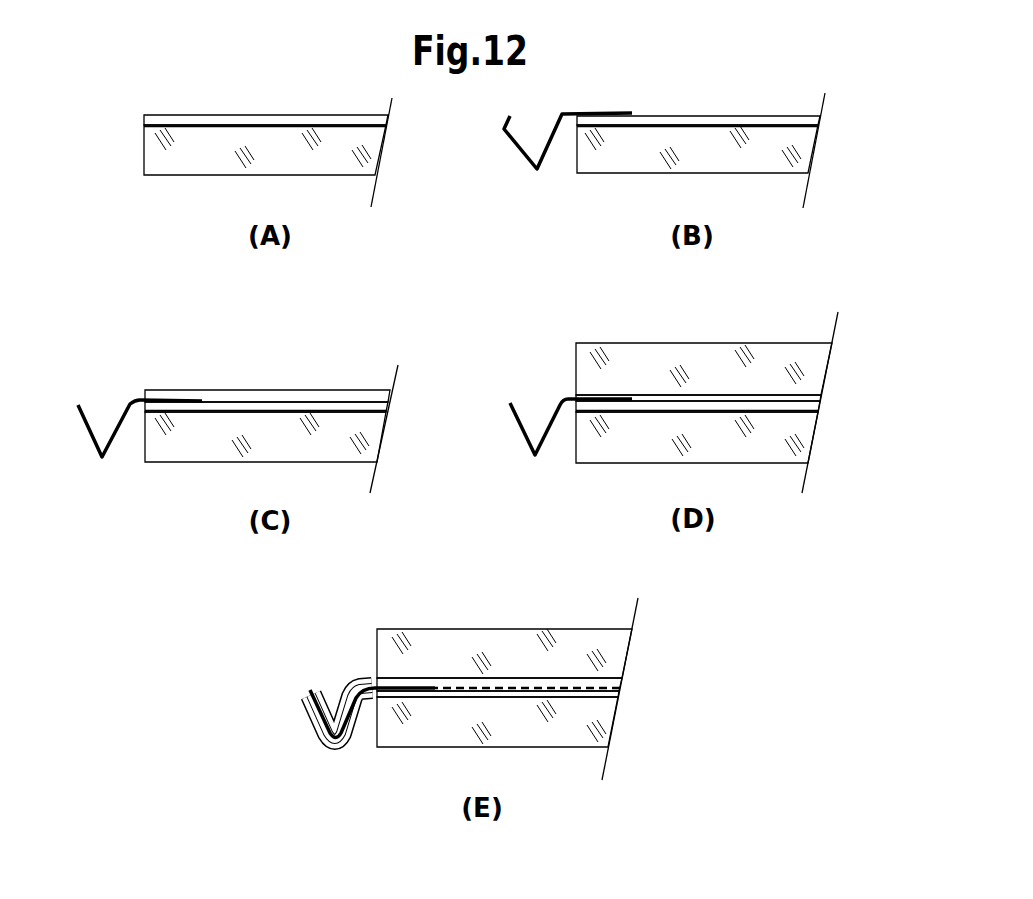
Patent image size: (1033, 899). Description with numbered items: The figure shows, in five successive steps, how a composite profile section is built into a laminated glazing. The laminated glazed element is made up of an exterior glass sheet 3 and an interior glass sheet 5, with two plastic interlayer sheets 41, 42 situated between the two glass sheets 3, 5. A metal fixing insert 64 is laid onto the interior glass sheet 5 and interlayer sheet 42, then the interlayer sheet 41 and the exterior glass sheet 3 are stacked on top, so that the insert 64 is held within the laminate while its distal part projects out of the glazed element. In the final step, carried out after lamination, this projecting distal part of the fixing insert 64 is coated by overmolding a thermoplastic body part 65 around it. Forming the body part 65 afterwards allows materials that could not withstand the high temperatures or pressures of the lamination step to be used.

The exterior glass sheet 3 is at (638, 358).
The interior glass sheet 5 is at (198, 162).
The plastic interlayer sheet 41 is at (237, 398).
The plastic interlayer sheet 42 is at (200, 118).
The fixing insert 64 is at (513, 150).
The body part 65 is at (313, 728).